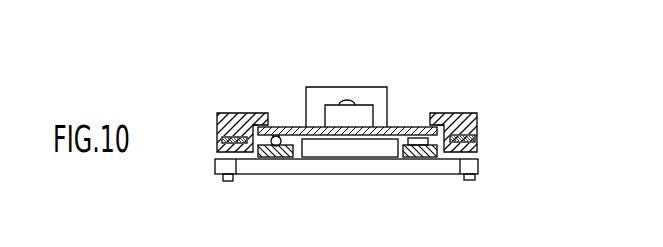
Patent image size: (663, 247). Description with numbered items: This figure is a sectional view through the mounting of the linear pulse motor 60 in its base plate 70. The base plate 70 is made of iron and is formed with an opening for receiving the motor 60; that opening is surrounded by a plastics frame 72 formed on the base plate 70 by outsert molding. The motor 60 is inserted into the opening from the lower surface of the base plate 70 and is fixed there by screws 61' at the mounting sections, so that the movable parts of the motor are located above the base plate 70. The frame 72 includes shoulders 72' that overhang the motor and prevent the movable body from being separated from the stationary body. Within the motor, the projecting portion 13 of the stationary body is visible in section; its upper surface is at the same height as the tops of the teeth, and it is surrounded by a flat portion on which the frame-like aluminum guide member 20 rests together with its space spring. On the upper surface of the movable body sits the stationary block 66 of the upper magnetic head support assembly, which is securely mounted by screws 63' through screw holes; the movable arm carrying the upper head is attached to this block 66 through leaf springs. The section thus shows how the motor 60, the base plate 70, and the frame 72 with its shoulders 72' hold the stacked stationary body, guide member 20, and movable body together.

The linear pulse motor 60 is at (351, 184).
The screws 61' is at (362, 192).
The projecting portion 13 is at (335, 150).
The guide member 20 is at (423, 150).
The base plate 70 is at (474, 138).
The plastics frame 72 is at (349, 115).
The shoulders 72' is at (348, 99).
The stationary block 66 is at (372, 93).
The screws 63' is at (331, 76).